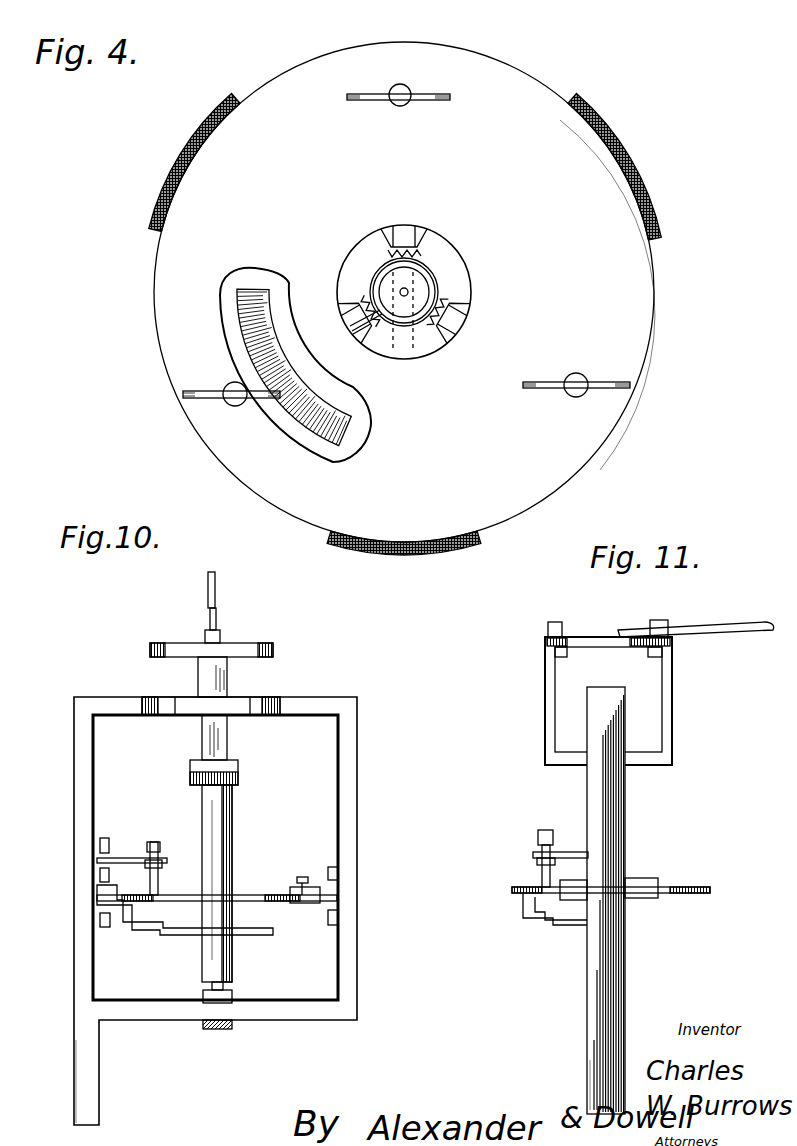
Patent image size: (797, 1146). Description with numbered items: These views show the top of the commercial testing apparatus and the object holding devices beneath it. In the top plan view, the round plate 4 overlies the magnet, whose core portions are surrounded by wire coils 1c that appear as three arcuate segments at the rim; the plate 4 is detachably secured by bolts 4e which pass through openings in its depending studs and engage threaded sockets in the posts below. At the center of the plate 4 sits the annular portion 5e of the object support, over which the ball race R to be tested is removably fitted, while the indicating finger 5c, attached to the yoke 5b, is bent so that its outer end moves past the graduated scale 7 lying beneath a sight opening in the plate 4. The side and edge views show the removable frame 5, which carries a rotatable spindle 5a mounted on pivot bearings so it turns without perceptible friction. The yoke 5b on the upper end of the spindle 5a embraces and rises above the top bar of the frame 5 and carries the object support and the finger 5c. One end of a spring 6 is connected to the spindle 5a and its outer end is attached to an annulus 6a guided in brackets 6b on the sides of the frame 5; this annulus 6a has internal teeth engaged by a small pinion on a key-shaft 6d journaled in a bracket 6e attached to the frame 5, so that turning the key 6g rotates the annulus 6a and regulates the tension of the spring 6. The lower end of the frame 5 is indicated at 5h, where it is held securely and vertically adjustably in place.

In FIG. 4, the wire coils 1c is at (208, 110).
In FIG. 4, the plate 4 is at (617, 398).
In FIG. 4, the bolts 4e is at (222, 398).
In FIG. 4, the frame 5 is at (422, 283).
In FIG. 10, the frame 5 is at (355, 803).
In FIG. 11, the frame 5 is at (626, 820).
In FIG. 10, the rotatable spindle 5a is at (228, 848).
In FIG. 10, the yoke 5b is at (228, 677).
In FIG. 11, the yoke 5b is at (675, 718).
In FIG. 4, the indicating finger 5c is at (355, 330).
In FIG. 10, the indicating finger 5c is at (215, 590).
In FIG. 11, the indicating finger 5c is at (742, 632).
In FIG. 4, the annular portion 5e is at (435, 288).
In FIG. 10, the frame leg 5h is at (108, 1081).
In FIG. 11, the frame leg 5h is at (606, 1083).
In FIG. 10, the spring 6 is at (258, 938).
In FIG. 11, the spring 6 is at (560, 923).
In FIG. 10, the annulus 6a is at (250, 893).
In FIG. 11, the annulus 6a is at (695, 894).
In FIG. 10, the brackets 6b is at (120, 905).
In FIG. 10, the key-shaft 6d is at (160, 848).
In FIG. 11, the key-shaft 6d is at (540, 868).
In FIG. 10, the bracket 6e is at (122, 857).
In FIG. 11, the bracket 6e is at (565, 852).
In FIG. 10, the key 6g is at (300, 877).
In FIG. 4, the graduated scale 7 is at (355, 445).
In FIG. 4, the ball race R is at (432, 268).